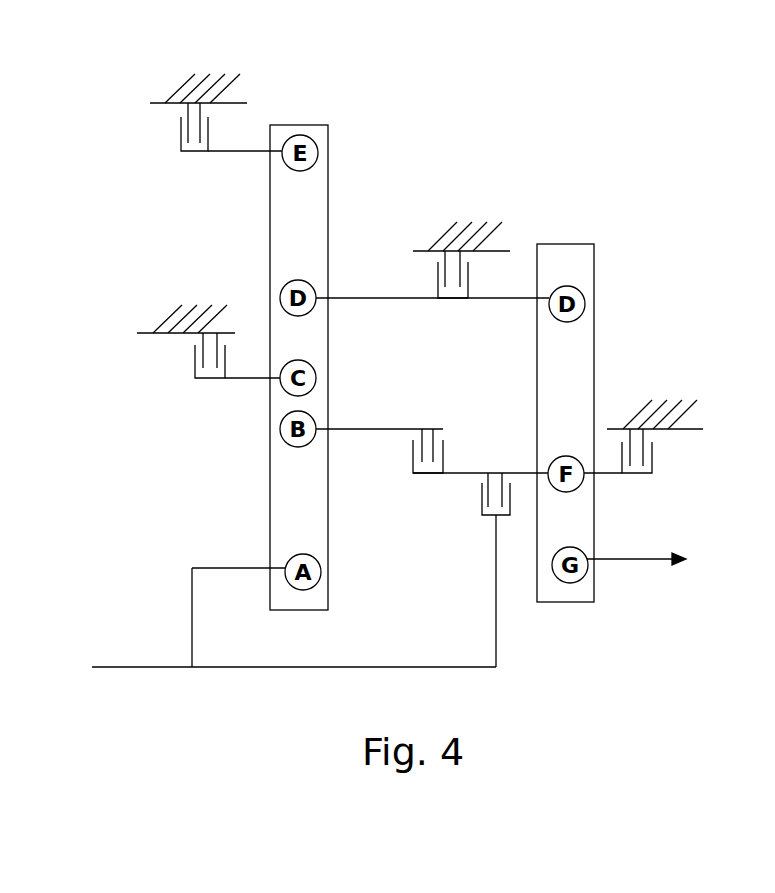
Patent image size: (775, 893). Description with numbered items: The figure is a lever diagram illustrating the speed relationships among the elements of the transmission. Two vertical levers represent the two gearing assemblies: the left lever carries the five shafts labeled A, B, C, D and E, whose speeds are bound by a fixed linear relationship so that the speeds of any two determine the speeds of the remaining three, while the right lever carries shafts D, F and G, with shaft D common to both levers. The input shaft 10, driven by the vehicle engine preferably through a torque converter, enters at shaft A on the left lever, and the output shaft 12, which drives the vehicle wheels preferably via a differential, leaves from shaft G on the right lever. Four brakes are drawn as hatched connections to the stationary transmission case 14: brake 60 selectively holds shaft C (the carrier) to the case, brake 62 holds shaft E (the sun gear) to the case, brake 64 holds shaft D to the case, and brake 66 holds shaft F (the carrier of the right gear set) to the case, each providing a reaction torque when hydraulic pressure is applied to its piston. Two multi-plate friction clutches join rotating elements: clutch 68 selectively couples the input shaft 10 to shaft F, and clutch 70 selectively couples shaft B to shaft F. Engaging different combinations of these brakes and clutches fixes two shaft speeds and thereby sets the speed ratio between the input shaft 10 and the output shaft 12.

The input shaft 10 is at (448, 665).
The output shaft 12 is at (636, 561).
The transmission case 14 is at (185, 88).
The brake 60 is at (195, 356).
The brake 62 is at (181, 128).
The brake 64 is at (438, 285).
The brake 66 is at (653, 458).
The clutch 68 is at (482, 502).
The clutch 70 is at (446, 447).